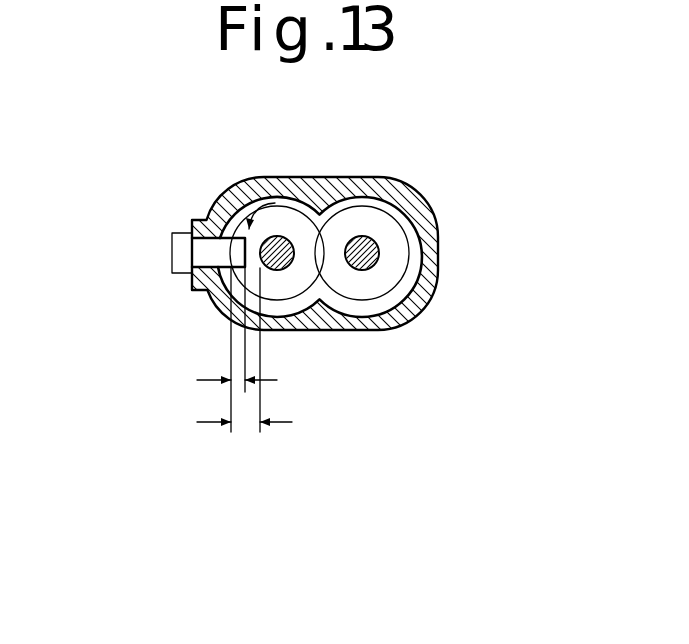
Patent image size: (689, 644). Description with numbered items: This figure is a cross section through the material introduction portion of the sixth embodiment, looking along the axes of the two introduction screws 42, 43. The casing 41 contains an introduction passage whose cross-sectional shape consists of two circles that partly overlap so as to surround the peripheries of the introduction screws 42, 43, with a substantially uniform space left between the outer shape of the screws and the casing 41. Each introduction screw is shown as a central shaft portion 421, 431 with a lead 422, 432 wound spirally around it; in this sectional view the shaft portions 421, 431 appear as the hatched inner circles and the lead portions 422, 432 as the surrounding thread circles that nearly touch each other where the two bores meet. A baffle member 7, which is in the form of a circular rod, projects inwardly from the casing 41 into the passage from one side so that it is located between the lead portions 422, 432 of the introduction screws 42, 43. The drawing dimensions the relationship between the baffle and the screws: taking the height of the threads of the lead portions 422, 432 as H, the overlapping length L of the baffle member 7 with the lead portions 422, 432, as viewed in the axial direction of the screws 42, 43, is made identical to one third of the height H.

The baffle member 7 is at (192, 250).
The casing 41 is at (408, 317).
The introduction screw 42 is at (421, 235).
The shaft portion 421 is at (380, 247).
The lead 422 is at (392, 268).
The introduction screw 43 is at (255, 266).
The shaft portion 431 is at (276, 241).
The lead 432 is at (279, 294).
The overlapping length L is at (238, 378).
The height of the threads H is at (244, 438).